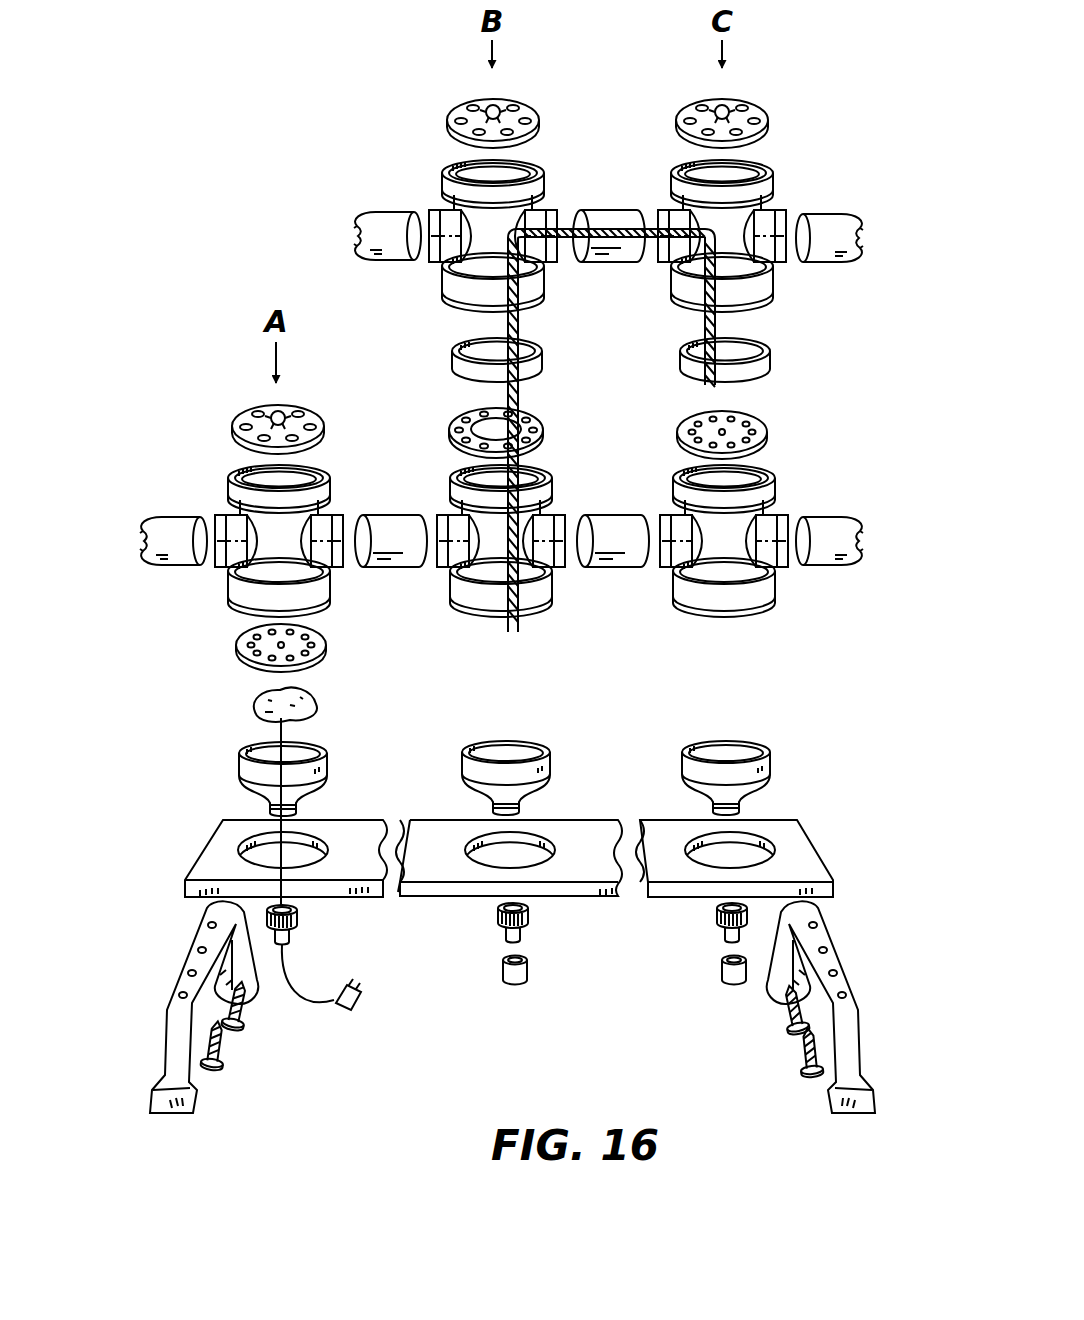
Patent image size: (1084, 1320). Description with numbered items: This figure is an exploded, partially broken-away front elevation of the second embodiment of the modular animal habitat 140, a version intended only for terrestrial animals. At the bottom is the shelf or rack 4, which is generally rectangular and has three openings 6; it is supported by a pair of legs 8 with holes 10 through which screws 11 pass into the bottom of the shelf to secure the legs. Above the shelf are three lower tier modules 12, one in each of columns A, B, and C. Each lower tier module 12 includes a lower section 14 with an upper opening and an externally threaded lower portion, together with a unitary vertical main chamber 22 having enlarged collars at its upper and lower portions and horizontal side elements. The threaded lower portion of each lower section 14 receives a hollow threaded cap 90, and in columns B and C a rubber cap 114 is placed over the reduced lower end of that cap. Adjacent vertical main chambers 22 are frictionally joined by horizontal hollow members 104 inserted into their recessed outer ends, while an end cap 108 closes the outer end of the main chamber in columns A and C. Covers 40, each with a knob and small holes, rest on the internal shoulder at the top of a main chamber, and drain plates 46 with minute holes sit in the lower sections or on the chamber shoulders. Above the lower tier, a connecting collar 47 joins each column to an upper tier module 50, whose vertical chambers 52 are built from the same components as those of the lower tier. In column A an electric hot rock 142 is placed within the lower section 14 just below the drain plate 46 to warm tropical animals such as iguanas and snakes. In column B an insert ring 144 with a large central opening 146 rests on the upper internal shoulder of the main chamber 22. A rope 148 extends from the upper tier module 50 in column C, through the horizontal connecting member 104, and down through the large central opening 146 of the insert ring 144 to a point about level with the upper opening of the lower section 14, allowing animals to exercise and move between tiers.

The shelf or rack 4 is at (586, 900).
The openings 6 is at (273, 848).
The legs 8 is at (162, 1027).
The holes 10 is at (188, 972).
The screws 11 is at (222, 1063).
The lower tier module 12 is at (205, 620).
The lower section 14 is at (240, 765).
The unitary vertical main chamber 22 is at (218, 502).
The cover 40 is at (232, 428).
The drain plate 46 is at (240, 648).
The connecting collar 47 is at (680, 365).
The upper tier module 50 is at (874, 236).
The upper cross fitting 52 is at (658, 188).
The hollow threaded cap 90 is at (299, 917).
The horizontal hollow member 104 is at (592, 264).
The end cap 108 is at (394, 210).
The rubber cap 114 is at (722, 973).
The modular animal habitat 140 is at (437, 1030).
The electric hot rock 142 is at (320, 713).
The insert ring 144 is at (453, 445).
The large central opening 146 is at (455, 424).
The rope 148 is at (505, 325).